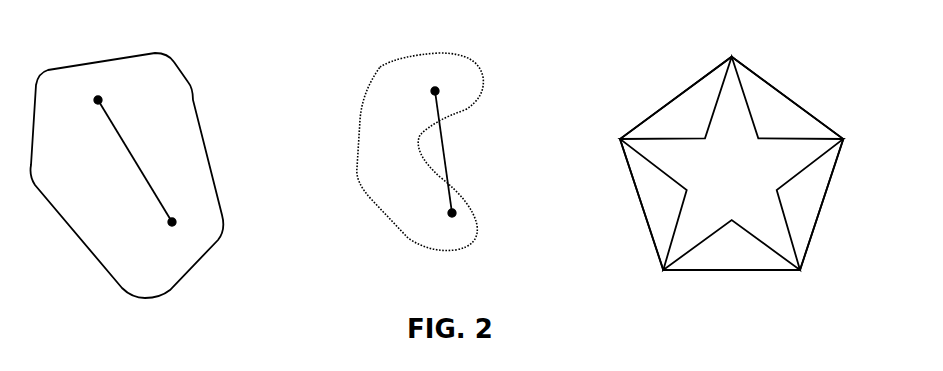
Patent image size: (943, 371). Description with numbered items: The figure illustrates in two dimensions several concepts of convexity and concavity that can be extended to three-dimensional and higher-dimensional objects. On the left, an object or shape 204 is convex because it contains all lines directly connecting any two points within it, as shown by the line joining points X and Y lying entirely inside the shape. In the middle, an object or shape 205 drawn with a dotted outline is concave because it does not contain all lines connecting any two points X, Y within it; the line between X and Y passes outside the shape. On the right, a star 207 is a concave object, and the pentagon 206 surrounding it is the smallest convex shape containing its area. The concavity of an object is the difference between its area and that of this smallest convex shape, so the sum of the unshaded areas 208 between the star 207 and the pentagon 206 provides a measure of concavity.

The convex object or shape 204 is at (167, 55).
The concave object or shape 205 is at (482, 63).
The pentagon 206 is at (810, 107).
The star 207 is at (745, 168).
The unshaded areas 208 is at (747, 262).